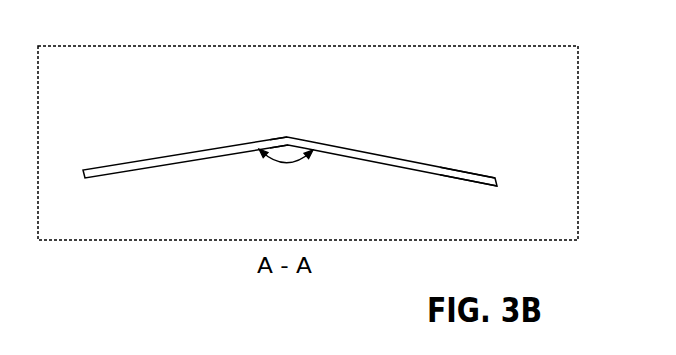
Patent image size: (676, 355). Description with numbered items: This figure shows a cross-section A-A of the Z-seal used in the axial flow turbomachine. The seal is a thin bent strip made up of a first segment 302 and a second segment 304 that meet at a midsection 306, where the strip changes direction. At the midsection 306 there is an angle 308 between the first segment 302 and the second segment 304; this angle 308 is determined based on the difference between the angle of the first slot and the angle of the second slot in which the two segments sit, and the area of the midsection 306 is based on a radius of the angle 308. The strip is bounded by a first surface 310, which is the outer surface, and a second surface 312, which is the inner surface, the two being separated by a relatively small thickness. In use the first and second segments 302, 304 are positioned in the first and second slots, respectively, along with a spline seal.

The first segment 302 is at (393, 156).
The second segment 304 is at (236, 146).
The midsection 306 is at (286, 139).
The angle 308 is at (281, 172).
The first surface 310 is at (484, 173).
The second surface 312 is at (486, 190).